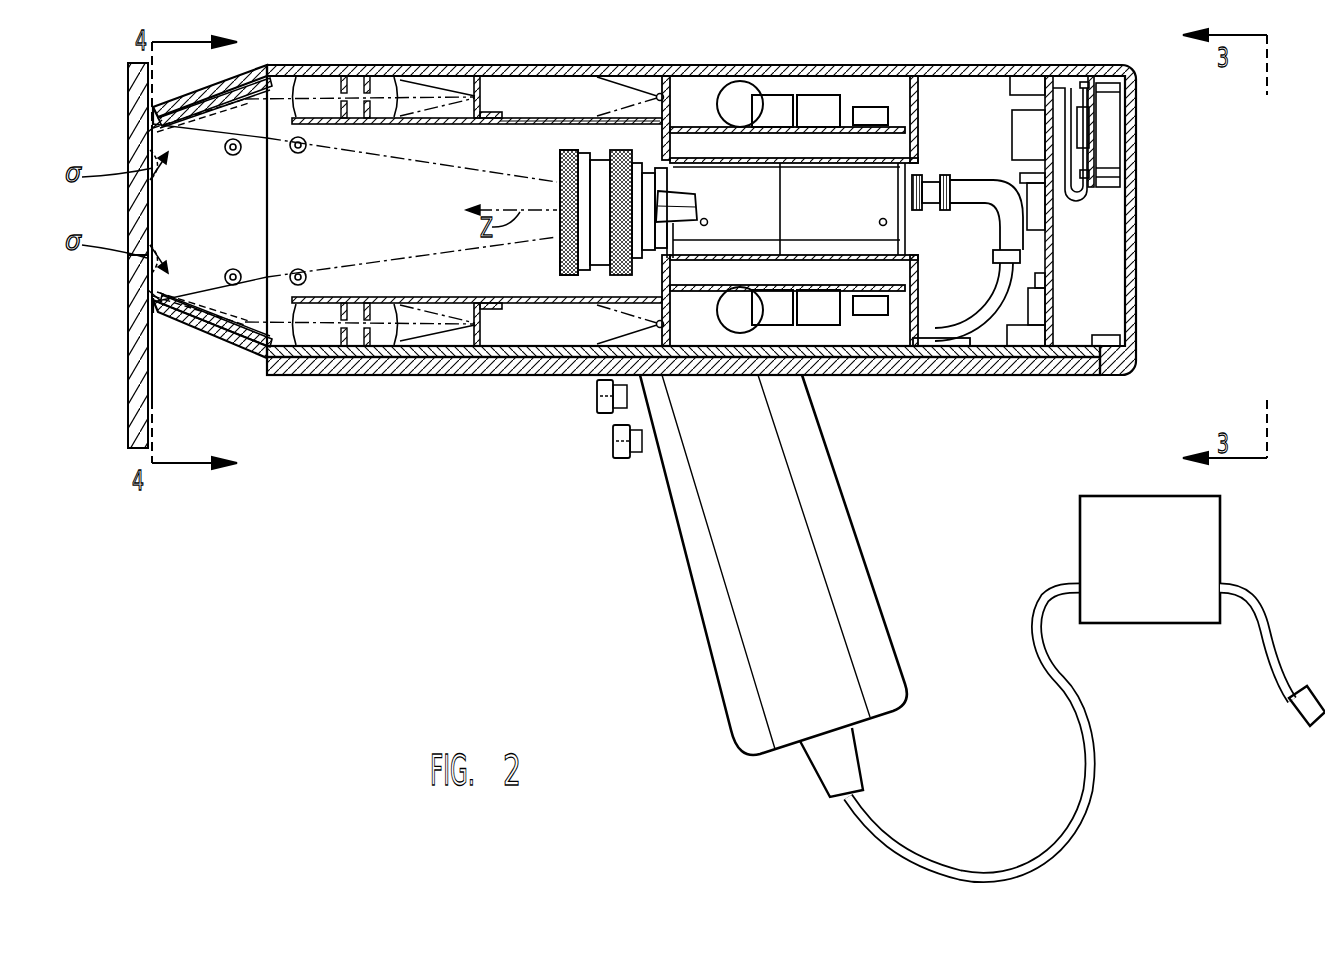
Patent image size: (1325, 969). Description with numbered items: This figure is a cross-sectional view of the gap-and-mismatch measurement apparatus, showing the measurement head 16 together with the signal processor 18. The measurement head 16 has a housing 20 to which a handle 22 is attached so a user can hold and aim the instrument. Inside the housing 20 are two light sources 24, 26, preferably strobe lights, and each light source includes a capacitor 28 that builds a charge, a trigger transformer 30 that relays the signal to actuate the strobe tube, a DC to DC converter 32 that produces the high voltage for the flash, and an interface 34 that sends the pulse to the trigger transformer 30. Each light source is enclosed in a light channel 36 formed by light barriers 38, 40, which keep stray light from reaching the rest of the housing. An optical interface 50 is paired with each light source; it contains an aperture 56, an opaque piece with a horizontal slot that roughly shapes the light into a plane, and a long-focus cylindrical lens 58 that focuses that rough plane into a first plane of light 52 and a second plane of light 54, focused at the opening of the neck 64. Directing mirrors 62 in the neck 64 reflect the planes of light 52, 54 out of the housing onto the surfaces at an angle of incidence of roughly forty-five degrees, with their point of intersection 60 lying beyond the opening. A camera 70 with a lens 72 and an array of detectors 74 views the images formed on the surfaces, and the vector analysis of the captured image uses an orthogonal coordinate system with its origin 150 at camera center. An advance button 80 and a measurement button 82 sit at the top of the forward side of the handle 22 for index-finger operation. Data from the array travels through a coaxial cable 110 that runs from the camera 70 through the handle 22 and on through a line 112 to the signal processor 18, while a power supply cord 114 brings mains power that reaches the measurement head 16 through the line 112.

The measurement head 16 is at (652, 620).
The signal processor 18 is at (1088, 515).
The housing 20 is at (408, 378).
The handle 22 is at (733, 690).
The first light source 24 is at (650, 90).
The second light source 26 is at (650, 325).
The capacitor 28 is at (737, 92).
The trigger transformer 30 is at (787, 98).
The DC to DC converter 32 is at (833, 102).
The interface 34 is at (890, 112).
The light channel 36 is at (500, 85).
The light barrier 38 is at (522, 126).
The light barrier 40 is at (453, 297).
The optical interface 50 is at (333, 135).
The first plane of light 52 is at (143, 132).
The second plane of light 54 is at (147, 288).
The aperture 56 is at (497, 93).
The long-focus cylindrical lens 58 is at (365, 76).
The point of intersection 60 is at (128, 222).
The directing mirror 62 is at (205, 98).
The neck 64 is at (128, 215).
The camera 70 is at (545, 275).
The lens 72 is at (597, 262).
The array of detectors 74 is at (707, 203).
The advance button 80 is at (595, 402).
The measurement button 82 is at (612, 445).
The coaxial cable 110 is at (992, 330).
The line 112 is at (875, 838).
The power supply cord 114 is at (1275, 660).
The origin 150 is at (708, 222).